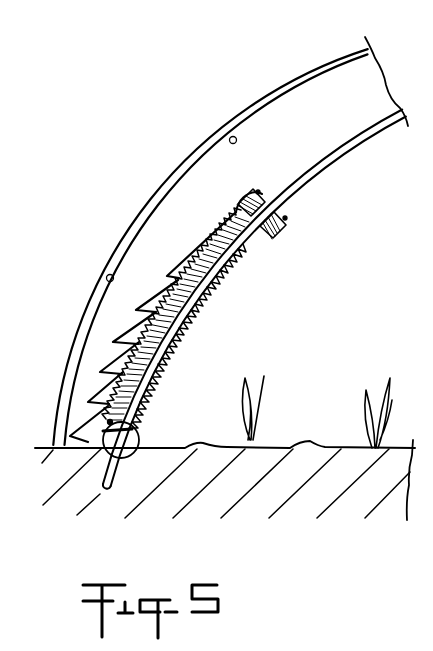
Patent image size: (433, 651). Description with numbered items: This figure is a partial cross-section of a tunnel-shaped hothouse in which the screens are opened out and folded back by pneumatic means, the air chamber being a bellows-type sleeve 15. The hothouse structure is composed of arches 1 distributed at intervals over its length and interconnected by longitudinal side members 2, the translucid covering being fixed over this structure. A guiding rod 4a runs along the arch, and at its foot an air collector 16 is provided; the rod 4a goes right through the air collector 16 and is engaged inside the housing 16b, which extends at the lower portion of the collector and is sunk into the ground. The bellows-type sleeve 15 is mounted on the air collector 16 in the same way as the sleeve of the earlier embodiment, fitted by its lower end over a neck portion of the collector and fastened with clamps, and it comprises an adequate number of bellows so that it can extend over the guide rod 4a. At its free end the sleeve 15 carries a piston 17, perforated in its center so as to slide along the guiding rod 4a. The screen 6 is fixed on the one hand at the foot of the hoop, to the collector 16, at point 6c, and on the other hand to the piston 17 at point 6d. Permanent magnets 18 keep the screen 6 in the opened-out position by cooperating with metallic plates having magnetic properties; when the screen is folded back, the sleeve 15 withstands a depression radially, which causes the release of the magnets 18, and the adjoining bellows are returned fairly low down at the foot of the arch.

The arches 1 is at (327, 66).
The longitudinal side members 2 is at (238, 138).
The guiding rod 4a is at (378, 124).
The screen 6 is at (200, 245).
The screen lower fixing point 6c is at (101, 455).
The screen upper fixing point 6d is at (257, 193).
The bellows-type sleeve 15 is at (188, 332).
The air collector 16 is at (135, 457).
The housing 16b is at (107, 486).
The piston 17 is at (280, 236).
The permanent magnets 18 is at (286, 220).